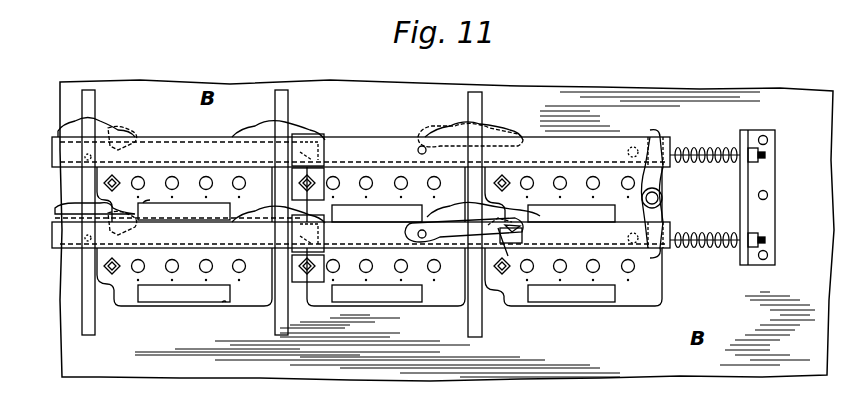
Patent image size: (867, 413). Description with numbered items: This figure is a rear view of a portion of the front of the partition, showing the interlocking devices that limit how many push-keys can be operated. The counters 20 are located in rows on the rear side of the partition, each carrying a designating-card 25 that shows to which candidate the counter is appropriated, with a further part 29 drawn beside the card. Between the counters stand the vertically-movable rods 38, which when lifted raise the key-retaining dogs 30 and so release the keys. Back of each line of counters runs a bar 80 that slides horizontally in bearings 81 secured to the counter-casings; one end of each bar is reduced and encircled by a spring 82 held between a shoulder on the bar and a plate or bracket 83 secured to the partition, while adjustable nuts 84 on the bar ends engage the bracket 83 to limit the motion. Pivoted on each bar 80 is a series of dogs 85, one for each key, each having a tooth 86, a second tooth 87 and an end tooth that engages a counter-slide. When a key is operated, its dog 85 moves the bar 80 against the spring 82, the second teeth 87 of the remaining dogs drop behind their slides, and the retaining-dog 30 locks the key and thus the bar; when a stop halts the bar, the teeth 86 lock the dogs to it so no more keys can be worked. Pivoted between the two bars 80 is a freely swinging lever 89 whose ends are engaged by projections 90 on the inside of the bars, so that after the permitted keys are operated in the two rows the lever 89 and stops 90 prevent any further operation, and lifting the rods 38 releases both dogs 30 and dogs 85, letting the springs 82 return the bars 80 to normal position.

The counters 20 is at (195, 170).
The designating-cards 25 is at (190, 302).
The name plate spring clip 29 is at (224, 303).
The key-retaining dogs 30 is at (100, 122).
The vertically-movable rods 38 is at (95, 101).
The bars 80 is at (361, 192).
The bearings 81 is at (507, 246).
The springs 82 is at (326, 146).
The plate or bracket 83 is at (745, 183).
The adjustable nuts 84 is at (756, 162).
The dogs 85 is at (125, 136).
The tooth 86 is at (498, 232).
The second tooth 87 is at (512, 232).
The lever 89 is at (660, 178).
The projections or stops 90 is at (634, 146).